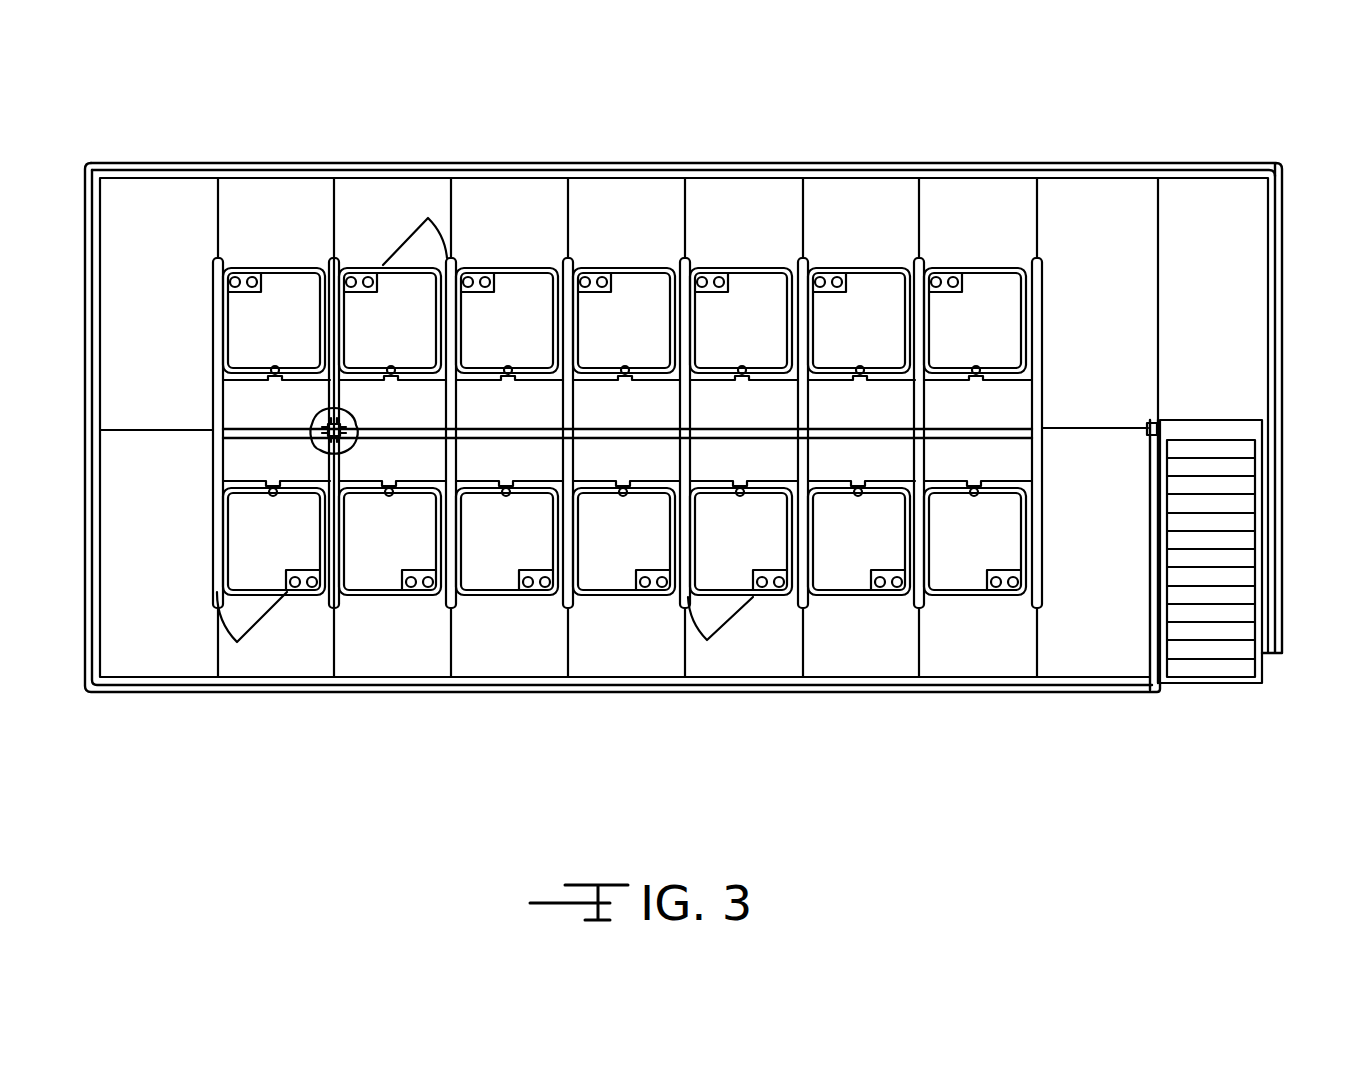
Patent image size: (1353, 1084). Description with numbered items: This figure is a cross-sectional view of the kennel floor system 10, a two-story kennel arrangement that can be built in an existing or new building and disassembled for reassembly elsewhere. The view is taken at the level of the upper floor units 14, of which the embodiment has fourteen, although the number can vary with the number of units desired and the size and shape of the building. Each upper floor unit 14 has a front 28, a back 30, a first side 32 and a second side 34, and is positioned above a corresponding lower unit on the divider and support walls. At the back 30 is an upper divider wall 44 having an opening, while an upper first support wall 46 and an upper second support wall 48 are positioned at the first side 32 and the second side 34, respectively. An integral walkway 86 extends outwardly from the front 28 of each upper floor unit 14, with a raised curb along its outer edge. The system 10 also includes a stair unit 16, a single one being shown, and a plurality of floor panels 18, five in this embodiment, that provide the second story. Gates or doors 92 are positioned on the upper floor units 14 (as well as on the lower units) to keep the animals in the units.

The kennel floor system 10 is at (710, 429).
The upper floor unit 14 is at (543, 688).
The stair unit 16 is at (1222, 542).
The floor panel 18 is at (133, 208).
The front 28 is at (508, 597).
The back 30 is at (476, 432).
The first side 32 is at (563, 467).
The second side 34 is at (438, 467).
The upper divider wall 44 is at (518, 439).
The upper first support wall 46 is at (573, 590).
The upper second support wall 48 is at (437, 593).
The integral walkway 86 is at (478, 658).
The gates or doors 92 is at (727, 620).